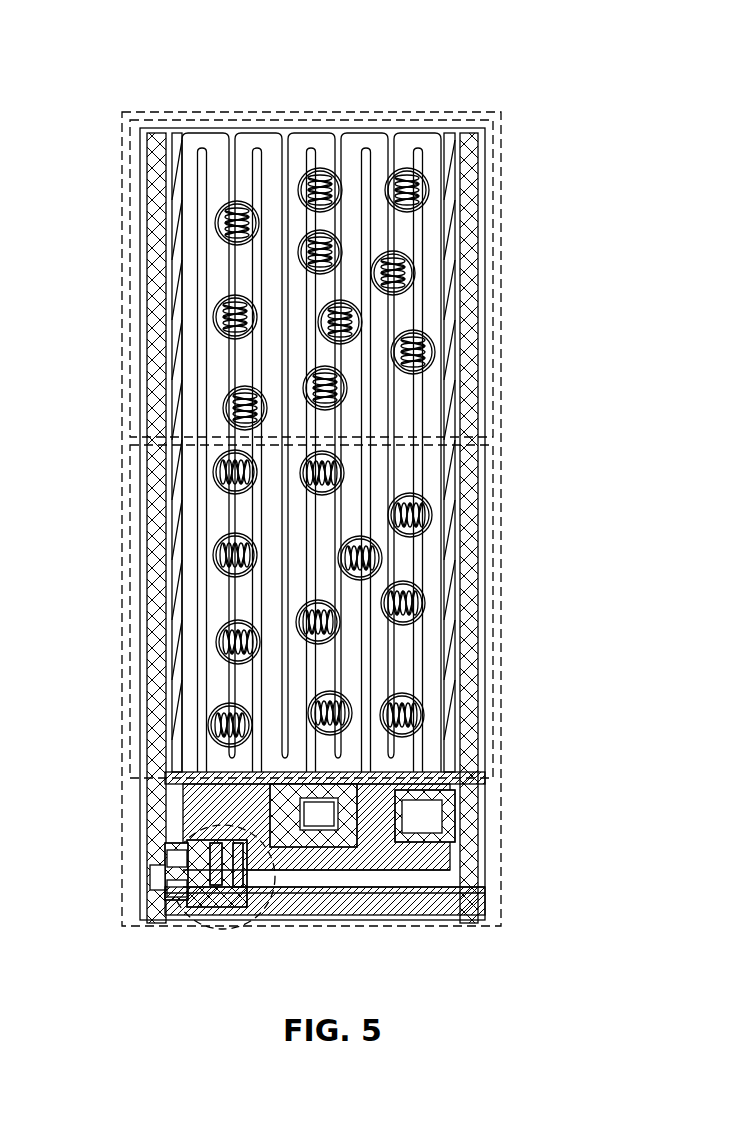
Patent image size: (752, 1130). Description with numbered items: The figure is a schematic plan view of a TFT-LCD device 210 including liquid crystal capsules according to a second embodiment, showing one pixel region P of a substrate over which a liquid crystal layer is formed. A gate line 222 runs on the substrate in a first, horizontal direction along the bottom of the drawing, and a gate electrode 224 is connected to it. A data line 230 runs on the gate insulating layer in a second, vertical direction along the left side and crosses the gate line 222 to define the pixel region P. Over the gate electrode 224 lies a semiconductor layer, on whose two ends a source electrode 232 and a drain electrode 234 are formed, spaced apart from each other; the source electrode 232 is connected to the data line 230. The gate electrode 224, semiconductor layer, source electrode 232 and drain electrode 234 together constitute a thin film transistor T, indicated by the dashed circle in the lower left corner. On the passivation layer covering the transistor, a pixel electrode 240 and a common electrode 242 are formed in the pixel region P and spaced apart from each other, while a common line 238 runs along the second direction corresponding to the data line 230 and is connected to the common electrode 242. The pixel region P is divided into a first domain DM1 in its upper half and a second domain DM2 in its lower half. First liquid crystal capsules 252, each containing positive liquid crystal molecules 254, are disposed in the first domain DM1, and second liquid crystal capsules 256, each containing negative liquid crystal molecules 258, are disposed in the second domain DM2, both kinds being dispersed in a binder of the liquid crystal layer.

The TFT-LCD device 210 is at (323, 74).
The gate line 222 is at (375, 903).
The gate electrode 224 is at (183, 832).
The data line 230 is at (157, 722).
The source electrode 232 is at (207, 915).
The drain electrode 234 is at (247, 913).
The common line 238 is at (482, 605).
The pixel electrode 240 is at (420, 642).
The common electrode 242 is at (393, 673).
The first liquid crystal capsule 252 is at (200, 228).
The positive liquid crystal molecule 254 is at (222, 205).
The second liquid crystal capsule 256 is at (200, 482).
The negative liquid crystal molecule 258 is at (218, 456).
The thin film transistor T is at (150, 878).
The pixel region P is at (493, 317).
The first domain DM1 is at (485, 223).
The second domain DM2 is at (485, 540).